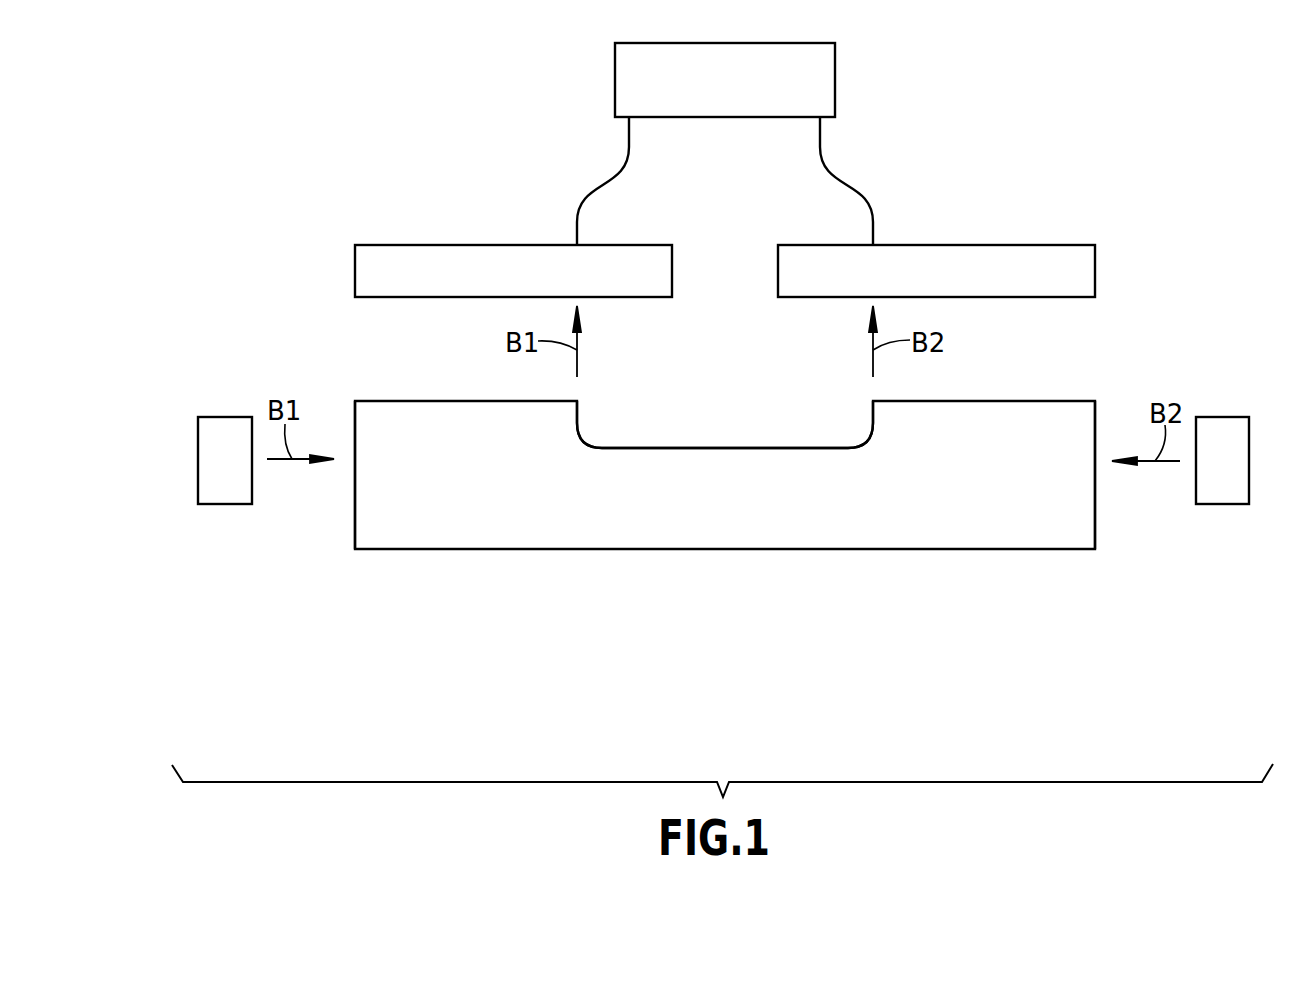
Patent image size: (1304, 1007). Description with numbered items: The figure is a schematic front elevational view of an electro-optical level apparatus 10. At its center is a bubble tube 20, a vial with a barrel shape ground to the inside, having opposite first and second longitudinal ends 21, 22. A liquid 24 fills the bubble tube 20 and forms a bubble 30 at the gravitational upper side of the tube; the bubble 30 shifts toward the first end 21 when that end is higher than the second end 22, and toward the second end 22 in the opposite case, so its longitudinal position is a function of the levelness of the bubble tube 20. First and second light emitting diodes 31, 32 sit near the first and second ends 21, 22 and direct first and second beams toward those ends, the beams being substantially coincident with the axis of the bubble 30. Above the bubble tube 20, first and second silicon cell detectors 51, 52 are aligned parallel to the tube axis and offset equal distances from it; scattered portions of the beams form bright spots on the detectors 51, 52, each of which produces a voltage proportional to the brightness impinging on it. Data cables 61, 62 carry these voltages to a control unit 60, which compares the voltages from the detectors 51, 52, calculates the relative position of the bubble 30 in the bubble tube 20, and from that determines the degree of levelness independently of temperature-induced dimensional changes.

The electro-optical level apparatus 10 is at (468, 695).
The bubble tube 20 is at (714, 512).
The first longitudinal end 21 is at (353, 514).
The second longitudinal end 22 is at (1095, 533).
The liquid 24 is at (917, 497).
The bubble 30 is at (700, 448).
The first light emitting diode 31 is at (217, 417).
The second light emitting diode 32 is at (1223, 417).
The first silicon cell detector 51 is at (393, 244).
The second silicon cell detector 52 is at (1029, 245).
The control unit 60 is at (835, 80).
The data cable 61 is at (617, 175).
The data cable 62 is at (832, 175).